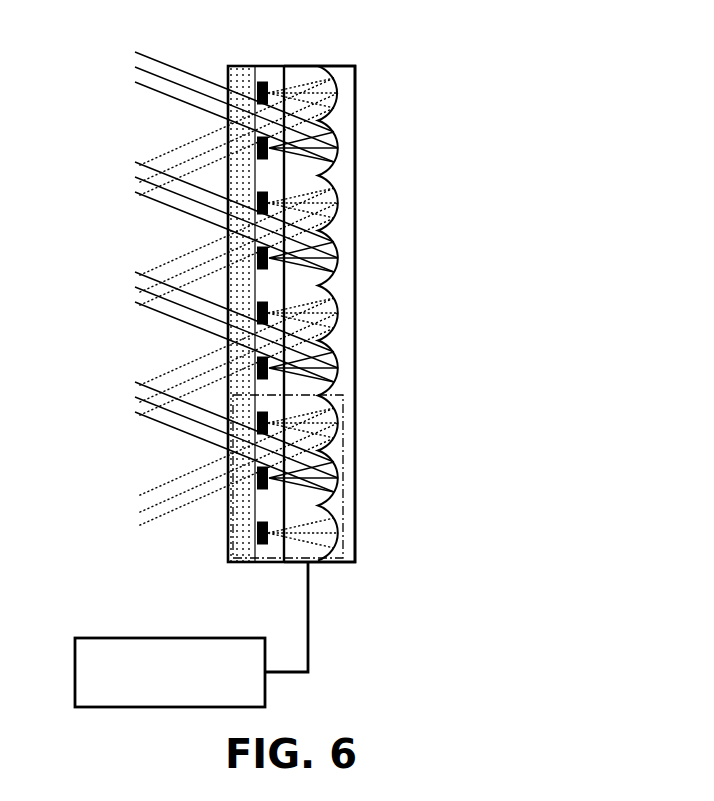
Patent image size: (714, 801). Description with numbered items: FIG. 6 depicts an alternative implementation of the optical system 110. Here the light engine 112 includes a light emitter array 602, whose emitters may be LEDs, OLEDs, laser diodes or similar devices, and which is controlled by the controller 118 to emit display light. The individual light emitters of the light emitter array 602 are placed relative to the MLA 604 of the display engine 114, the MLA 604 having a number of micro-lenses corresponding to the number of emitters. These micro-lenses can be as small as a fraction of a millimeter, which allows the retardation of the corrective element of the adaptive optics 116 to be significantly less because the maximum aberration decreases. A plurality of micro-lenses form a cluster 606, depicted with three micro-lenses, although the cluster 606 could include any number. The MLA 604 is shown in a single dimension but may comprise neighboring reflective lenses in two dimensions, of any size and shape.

The optical system 110 is at (515, 54).
The light engine 112 is at (264, 65).
The display engine 114 is at (347, 301).
The adaptive optics 116 is at (286, 564).
The controller 118 is at (191, 634).
The light emitter array 602 is at (256, 534).
The MLA 604 is at (353, 146).
The cluster 606 is at (345, 458).